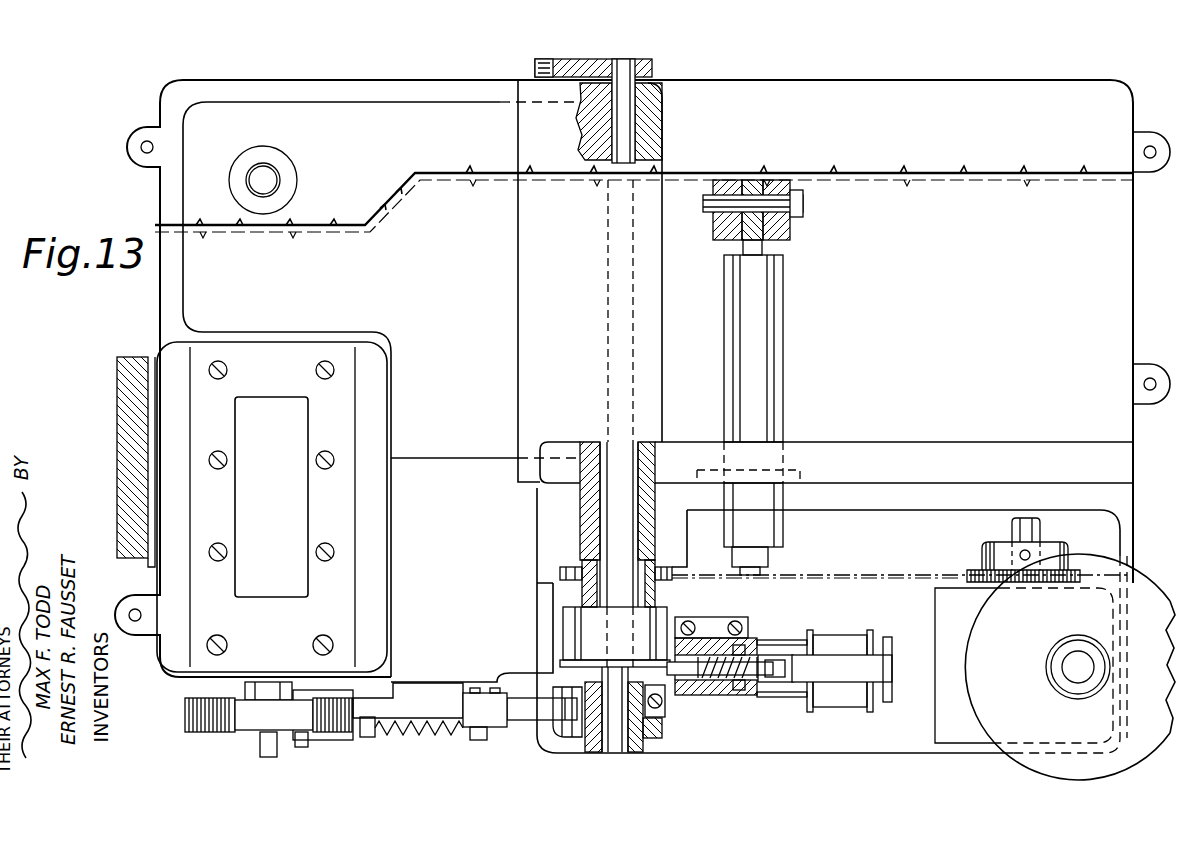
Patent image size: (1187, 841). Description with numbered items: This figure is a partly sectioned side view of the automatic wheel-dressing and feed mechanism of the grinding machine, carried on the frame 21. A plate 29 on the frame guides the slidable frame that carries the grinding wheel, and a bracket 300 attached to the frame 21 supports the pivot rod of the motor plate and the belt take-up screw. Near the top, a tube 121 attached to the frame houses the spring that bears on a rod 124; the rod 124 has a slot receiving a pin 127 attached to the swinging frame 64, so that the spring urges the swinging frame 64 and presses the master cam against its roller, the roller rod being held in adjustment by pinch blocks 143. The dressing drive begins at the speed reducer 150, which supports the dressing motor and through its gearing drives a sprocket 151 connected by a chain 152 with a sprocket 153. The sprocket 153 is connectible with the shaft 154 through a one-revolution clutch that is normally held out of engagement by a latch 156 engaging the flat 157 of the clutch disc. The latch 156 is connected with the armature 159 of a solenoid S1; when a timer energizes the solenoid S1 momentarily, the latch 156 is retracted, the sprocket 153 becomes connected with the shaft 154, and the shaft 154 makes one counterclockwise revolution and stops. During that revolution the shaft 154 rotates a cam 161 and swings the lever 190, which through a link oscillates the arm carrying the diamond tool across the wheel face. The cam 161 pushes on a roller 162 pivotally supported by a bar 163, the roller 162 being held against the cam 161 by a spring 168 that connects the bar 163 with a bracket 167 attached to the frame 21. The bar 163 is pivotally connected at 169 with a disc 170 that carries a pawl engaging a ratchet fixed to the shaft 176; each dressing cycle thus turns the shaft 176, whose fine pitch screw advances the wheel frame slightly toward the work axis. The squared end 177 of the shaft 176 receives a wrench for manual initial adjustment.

The lever 190 is at (571, 60).
The pin 127 is at (712, 203).
The swinging frame 64 is at (790, 232).
The rod 124 is at (742, 250).
The tube 121 is at (781, 388).
The plate 29 is at (293, 348).
The bracket 300 is at (117, 366).
The sprocket 153 is at (560, 569).
The cam 161 is at (563, 662).
The shaft 154 is at (613, 753).
The roller 162 is at (560, 740).
The frame 21 is at (758, 757).
The flat 157 is at (670, 638).
The latch 156 is at (680, 685).
The armature 159 is at (776, 660).
The solenoid S1 is at (848, 640).
The speed reducer 150 is at (935, 611).
The pinch blocks 143 is at (1140, 577).
The sprocket 151 is at (975, 573).
The chain 152 is at (862, 570).
The shaft 176 is at (265, 692).
The pivot connection 169 is at (302, 750).
The disc 170 is at (240, 727).
The squared end 177 is at (262, 758).
The bar 163 is at (362, 740).
The bracket 167 is at (443, 733).
The spring 168 is at (458, 742).